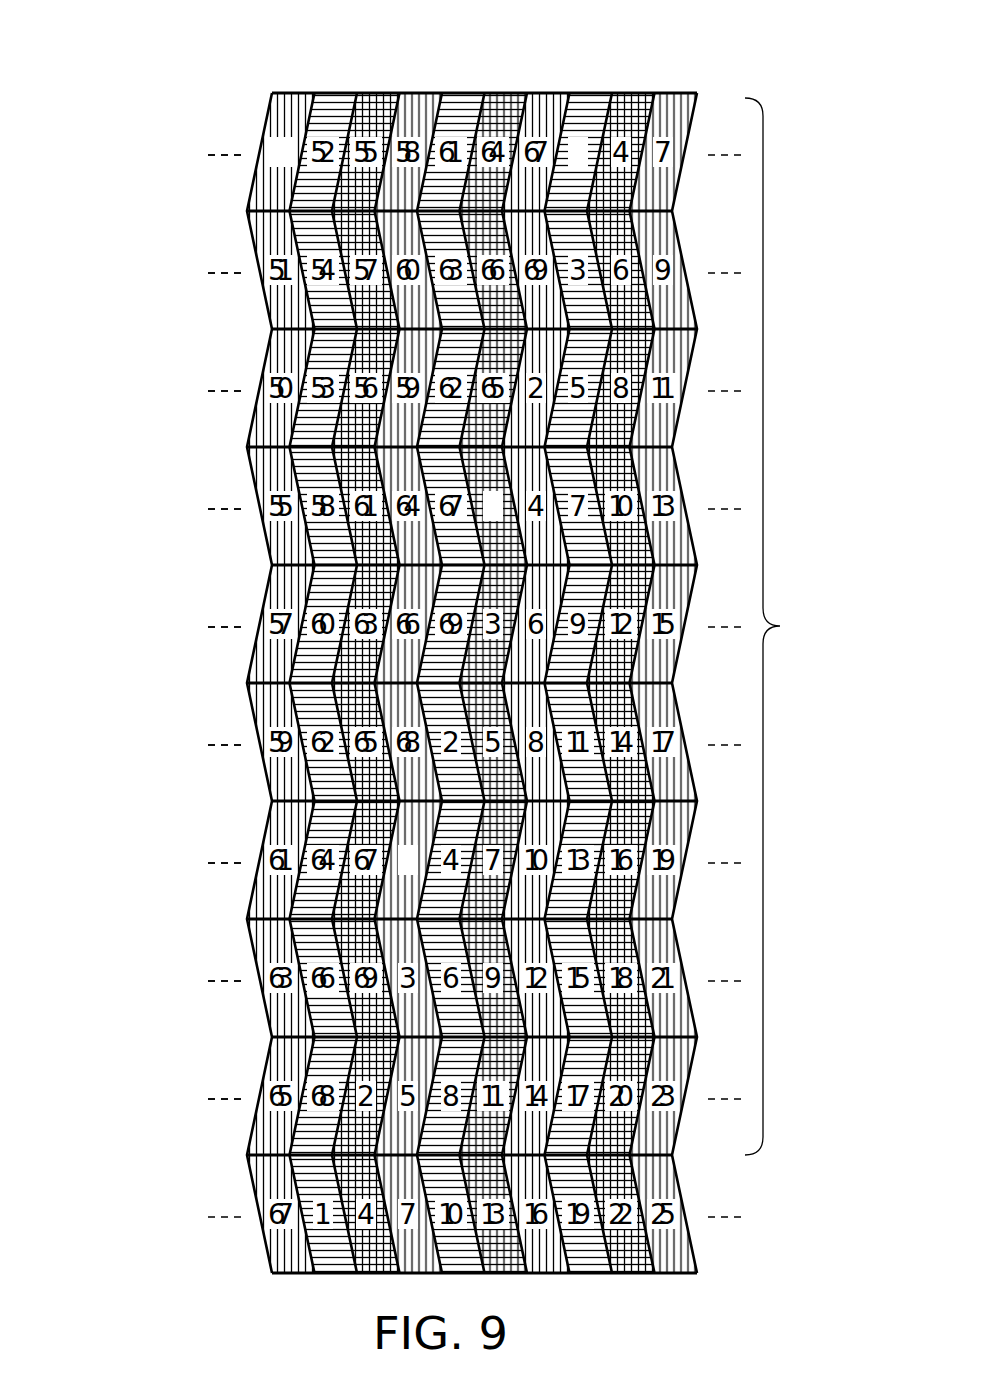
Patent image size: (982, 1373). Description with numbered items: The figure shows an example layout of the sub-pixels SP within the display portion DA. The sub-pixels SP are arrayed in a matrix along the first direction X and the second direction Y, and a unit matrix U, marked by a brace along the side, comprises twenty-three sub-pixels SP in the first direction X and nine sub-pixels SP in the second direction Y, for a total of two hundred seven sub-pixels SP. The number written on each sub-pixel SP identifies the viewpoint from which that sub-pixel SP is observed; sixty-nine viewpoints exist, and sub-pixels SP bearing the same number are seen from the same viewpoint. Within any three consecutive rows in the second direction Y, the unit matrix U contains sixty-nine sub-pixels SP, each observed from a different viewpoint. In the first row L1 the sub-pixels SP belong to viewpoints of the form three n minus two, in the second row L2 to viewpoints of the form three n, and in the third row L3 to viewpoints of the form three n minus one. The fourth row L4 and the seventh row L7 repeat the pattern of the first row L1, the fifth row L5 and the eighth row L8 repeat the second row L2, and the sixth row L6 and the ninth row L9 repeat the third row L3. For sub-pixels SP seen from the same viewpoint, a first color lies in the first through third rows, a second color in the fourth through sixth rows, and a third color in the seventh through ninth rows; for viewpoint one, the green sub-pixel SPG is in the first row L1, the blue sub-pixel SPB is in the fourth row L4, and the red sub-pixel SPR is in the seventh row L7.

The sub-pixel SP is at (285, 97).
The green sub-pixel SPG is at (582, 97).
The blue sub-pixel SPB is at (487, 533).
The red sub-pixel SPR is at (410, 816).
The display portion DA is at (675, 80).
The unit matrix U is at (778, 626).
The first row L1 is at (178, 147).
The second row L2 is at (178, 265).
The third row L3 is at (178, 383).
The fourth row L4 is at (178, 501).
The fifth row L5 is at (178, 619).
The sixth row L6 is at (178, 737).
The seventh row L7 is at (178, 855).
The eighth row L8 is at (178, 973).
The ninth row L9 is at (178, 1091).
The first direction X is at (140, 52).
The second direction Y is at (83, 109).